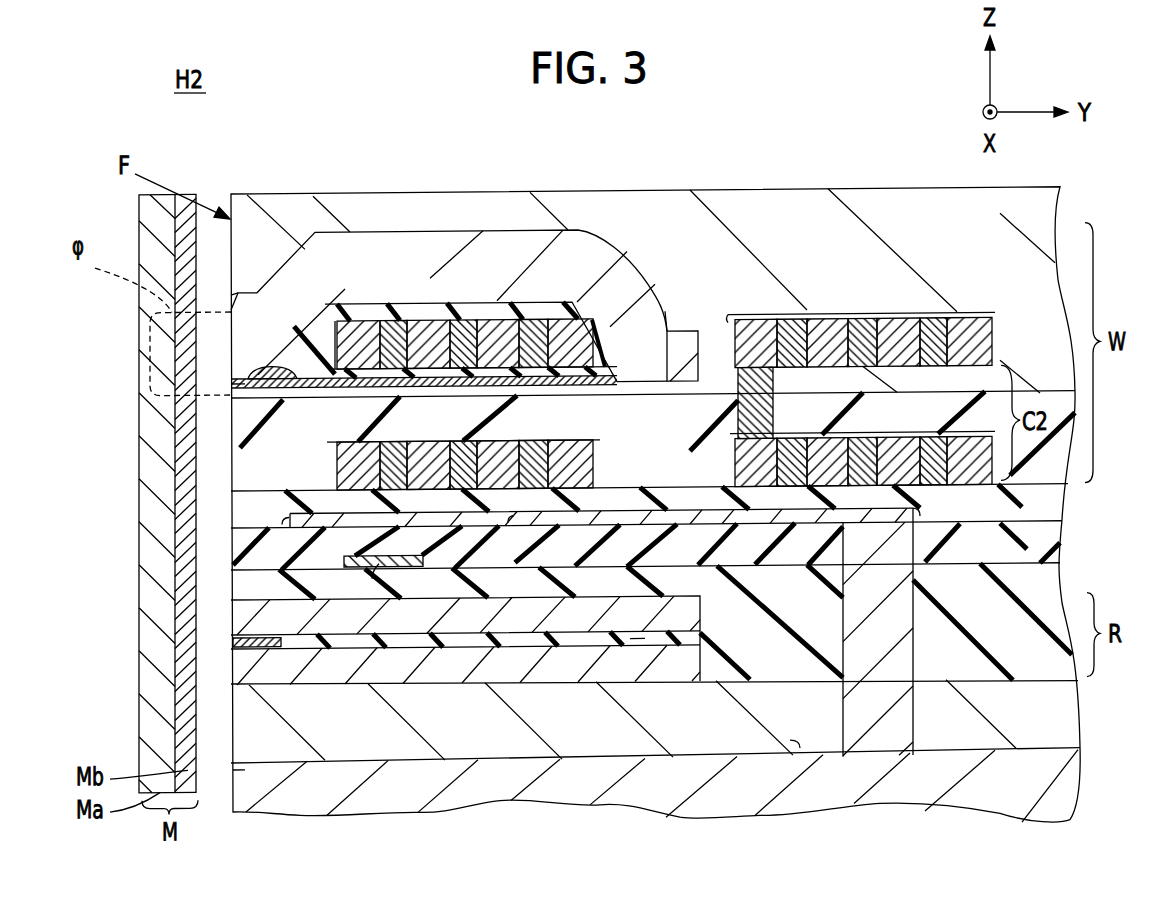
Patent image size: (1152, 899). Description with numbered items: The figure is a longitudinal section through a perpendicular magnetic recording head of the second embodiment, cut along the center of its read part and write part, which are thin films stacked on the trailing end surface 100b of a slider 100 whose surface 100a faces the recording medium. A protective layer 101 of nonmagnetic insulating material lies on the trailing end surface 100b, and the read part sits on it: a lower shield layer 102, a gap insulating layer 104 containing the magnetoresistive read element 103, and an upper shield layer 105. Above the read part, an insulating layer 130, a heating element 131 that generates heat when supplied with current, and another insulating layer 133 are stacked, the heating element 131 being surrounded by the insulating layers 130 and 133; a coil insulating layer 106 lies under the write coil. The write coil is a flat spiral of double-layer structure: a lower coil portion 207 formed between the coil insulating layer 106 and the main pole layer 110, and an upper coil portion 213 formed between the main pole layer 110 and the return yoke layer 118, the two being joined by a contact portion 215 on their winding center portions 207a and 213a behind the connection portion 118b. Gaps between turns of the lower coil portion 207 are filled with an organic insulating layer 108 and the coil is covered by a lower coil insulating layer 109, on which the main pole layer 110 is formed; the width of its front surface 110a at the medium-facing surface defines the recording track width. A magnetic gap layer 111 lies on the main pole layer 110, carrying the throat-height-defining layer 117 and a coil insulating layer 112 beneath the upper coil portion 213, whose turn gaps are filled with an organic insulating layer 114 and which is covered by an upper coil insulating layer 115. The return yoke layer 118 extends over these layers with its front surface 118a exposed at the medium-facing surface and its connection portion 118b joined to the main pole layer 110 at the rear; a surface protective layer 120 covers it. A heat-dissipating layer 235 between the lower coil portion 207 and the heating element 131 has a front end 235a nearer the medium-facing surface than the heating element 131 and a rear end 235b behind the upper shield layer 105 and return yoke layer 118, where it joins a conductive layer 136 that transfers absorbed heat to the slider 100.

The slider 100 is at (724, 815).
The surface facing the recording medium 100a is at (236, 770).
The trailing end surface 100b is at (800, 753).
The protective layer 101 is at (250, 715).
The lower shield layer 102 is at (235, 667).
The read element 103 is at (233, 643).
The gap insulating layer 104 is at (640, 642).
The upper shield layer 105 is at (247, 617).
The coil insulating layer 106 is at (290, 518).
The organic insulating layer 108 is at (253, 472).
The lower coil insulating layer 109 is at (250, 505).
The main pole layer 110 is at (231, 393).
The front surface of the main pole layer 110a is at (231, 390).
The magnetic gap layer 111 is at (231, 388).
The coil insulating layer 112 is at (296, 368).
The organic insulating layer 114 is at (615, 369).
The upper coil insulating layer 115 is at (337, 305).
The throat-height-defining layer 117 is at (280, 367).
The return yoke layer 118 is at (500, 247).
The front surface of the return yoke layer 118a is at (231, 256).
The connection portion 118b is at (688, 324).
The surface protective layer 120 is at (385, 215).
The insulating layer 130 is at (247, 587).
The heating element 131 is at (379, 565).
The insulating layer 133 is at (250, 548).
The conductive layer 136 is at (882, 748).
The lower coil portion 207 is at (467, 435).
The winding center portion 207a is at (755, 474).
The upper coil portion 213 is at (470, 305).
The winding center portion 213a is at (717, 319).
The contact portion 215 is at (735, 418).
The heat-dissipating layer 235 is at (514, 518).
The front end 235a is at (289, 518).
The rear end 235b is at (915, 514).